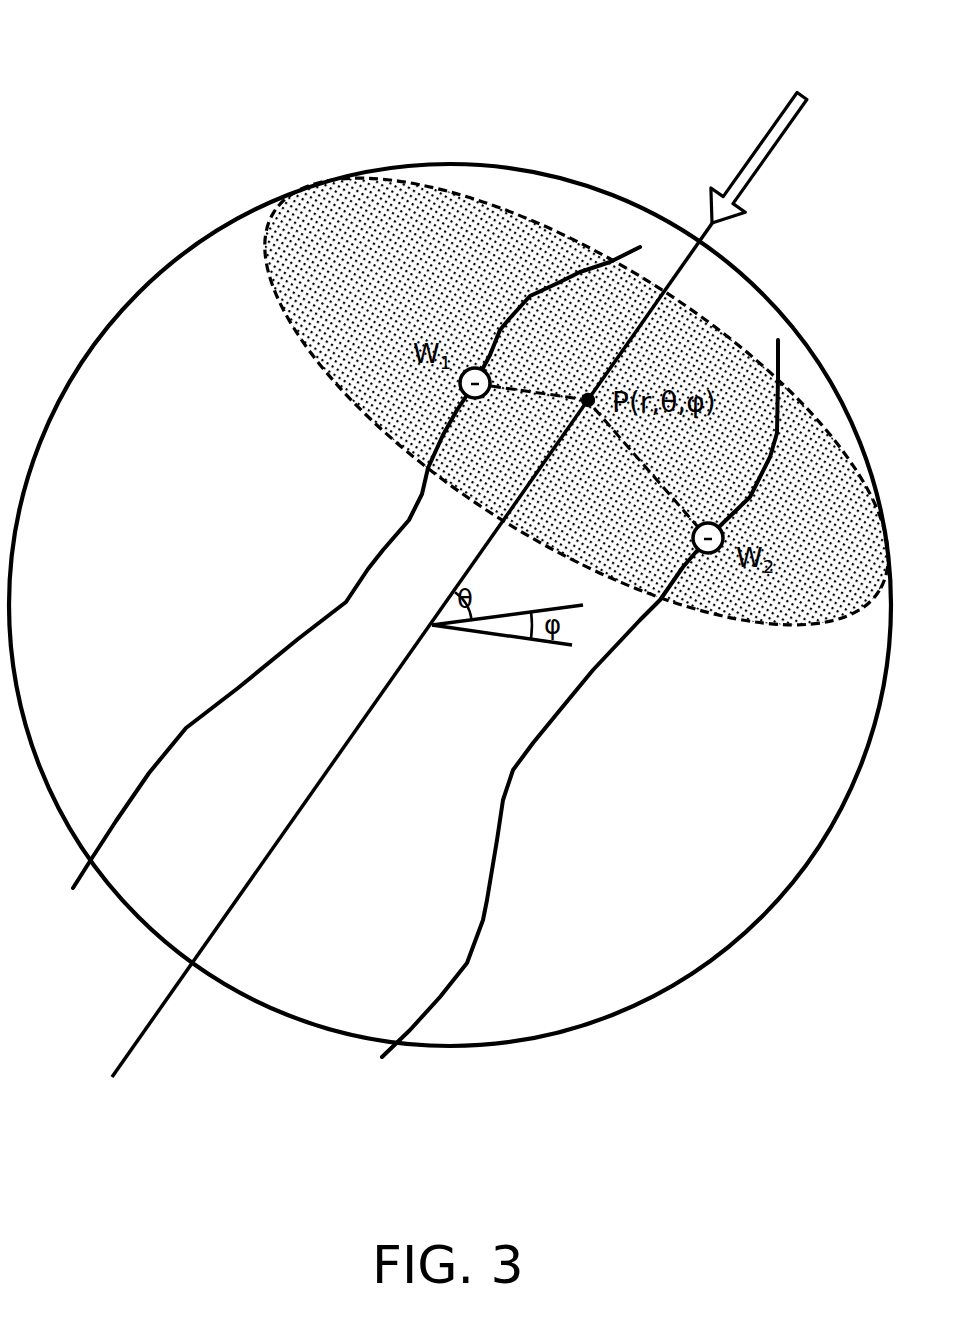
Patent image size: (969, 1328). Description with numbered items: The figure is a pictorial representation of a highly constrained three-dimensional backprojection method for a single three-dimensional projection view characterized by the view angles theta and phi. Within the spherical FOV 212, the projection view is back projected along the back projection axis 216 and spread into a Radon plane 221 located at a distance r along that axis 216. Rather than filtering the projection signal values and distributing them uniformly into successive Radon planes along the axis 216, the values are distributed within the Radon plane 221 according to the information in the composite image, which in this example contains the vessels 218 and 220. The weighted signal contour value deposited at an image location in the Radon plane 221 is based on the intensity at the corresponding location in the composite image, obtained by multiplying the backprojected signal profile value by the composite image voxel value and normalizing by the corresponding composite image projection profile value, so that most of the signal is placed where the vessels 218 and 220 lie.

The FOV 212 is at (152, 274).
The back projection axis 216 is at (770, 123).
The blood vessel 218 is at (380, 552).
The blood vessel 220 is at (590, 672).
The Radon plane 221 is at (447, 189).